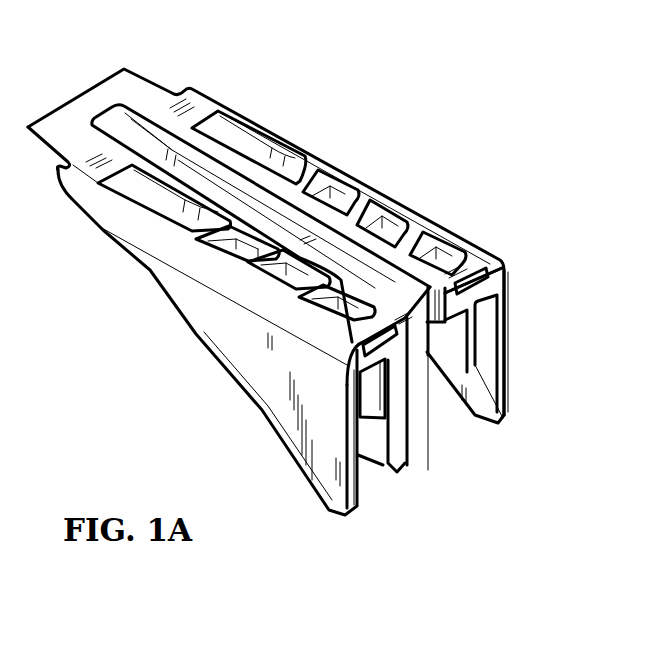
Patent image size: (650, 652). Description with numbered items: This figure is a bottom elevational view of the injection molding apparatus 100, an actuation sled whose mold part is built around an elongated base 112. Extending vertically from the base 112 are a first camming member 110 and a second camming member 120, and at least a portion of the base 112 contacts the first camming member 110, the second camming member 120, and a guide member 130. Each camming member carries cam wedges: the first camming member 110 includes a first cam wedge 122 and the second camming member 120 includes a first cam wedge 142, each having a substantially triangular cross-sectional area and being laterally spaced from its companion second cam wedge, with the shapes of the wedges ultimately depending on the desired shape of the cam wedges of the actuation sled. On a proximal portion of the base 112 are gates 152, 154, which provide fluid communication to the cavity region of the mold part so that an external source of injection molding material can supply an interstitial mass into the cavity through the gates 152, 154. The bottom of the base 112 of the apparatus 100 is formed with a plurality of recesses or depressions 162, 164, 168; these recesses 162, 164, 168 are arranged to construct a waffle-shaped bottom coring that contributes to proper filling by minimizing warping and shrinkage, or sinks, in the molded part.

The injection molding apparatus 100 is at (379, 98).
The first camming member 110 is at (504, 418).
The base 112 is at (132, 84).
The second camming member 120 is at (347, 513).
The first cam wedge 122 is at (504, 420).
The guide member 130 is at (410, 463).
The first cam wedge 142 is at (385, 420).
The gate 152 is at (490, 272).
The gate 154 is at (353, 352).
The recess 162 is at (365, 192).
The recess 164 is at (262, 281).
The recess 168 is at (165, 120).